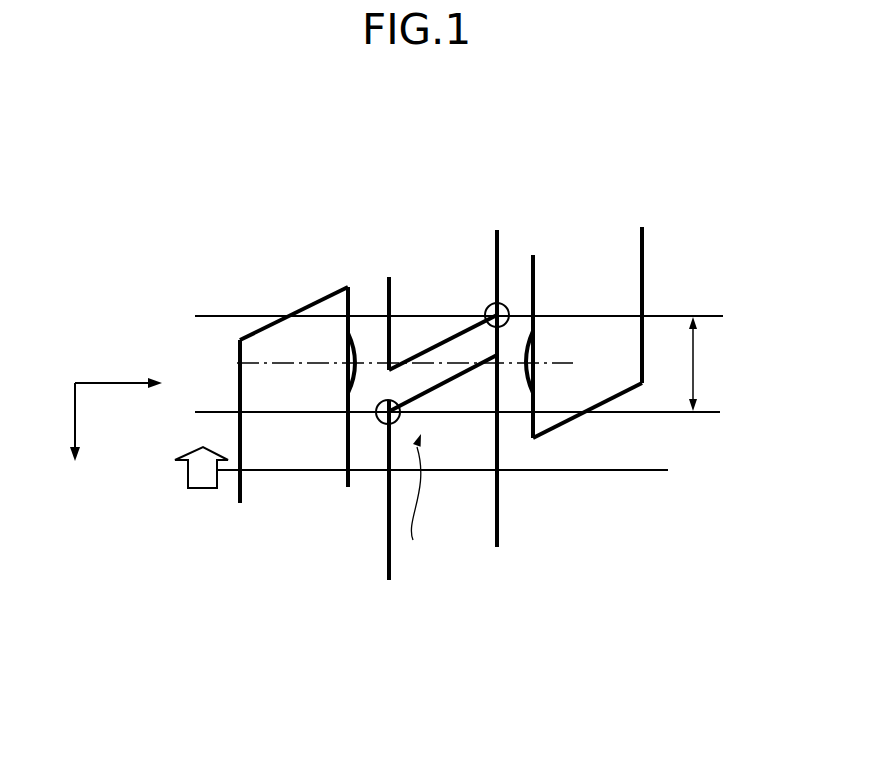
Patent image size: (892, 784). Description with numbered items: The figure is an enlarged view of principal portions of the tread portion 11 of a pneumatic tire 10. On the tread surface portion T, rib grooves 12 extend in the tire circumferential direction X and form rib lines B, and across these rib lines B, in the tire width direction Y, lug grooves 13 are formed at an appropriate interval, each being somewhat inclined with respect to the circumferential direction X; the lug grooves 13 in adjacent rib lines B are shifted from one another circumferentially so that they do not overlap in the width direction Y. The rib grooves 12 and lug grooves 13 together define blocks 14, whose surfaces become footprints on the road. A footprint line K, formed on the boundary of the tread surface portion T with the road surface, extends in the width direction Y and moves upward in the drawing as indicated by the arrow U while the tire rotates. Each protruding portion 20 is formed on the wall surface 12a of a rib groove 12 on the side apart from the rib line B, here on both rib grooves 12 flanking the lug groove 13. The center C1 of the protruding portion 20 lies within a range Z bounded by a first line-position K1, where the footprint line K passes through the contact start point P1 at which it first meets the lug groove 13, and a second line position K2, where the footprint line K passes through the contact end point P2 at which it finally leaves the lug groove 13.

The pneumatic tire 10 is at (150, 268).
The tread portion 11 is at (596, 212).
The rib groove 12 is at (372, 273).
The wall surface 12a is at (350, 452).
The lug groove 13 is at (312, 297).
The block 14 is at (263, 338).
The protruding portion 20 is at (355, 330).
The rib line B is at (270, 298).
The center of the protruding portion C1 is at (543, 362).
The contact start point P1 is at (376, 413).
The contact end point P2 is at (498, 310).
The footprint line K is at (667, 470).
The first line-position K1 is at (707, 412).
The second line position K2 is at (713, 316).
The tire circumferential direction X is at (76, 440).
The tire width direction Y is at (130, 383).
The range Z is at (710, 364).
The tread surface portion T is at (413, 509).
The arrow U is at (201, 488).